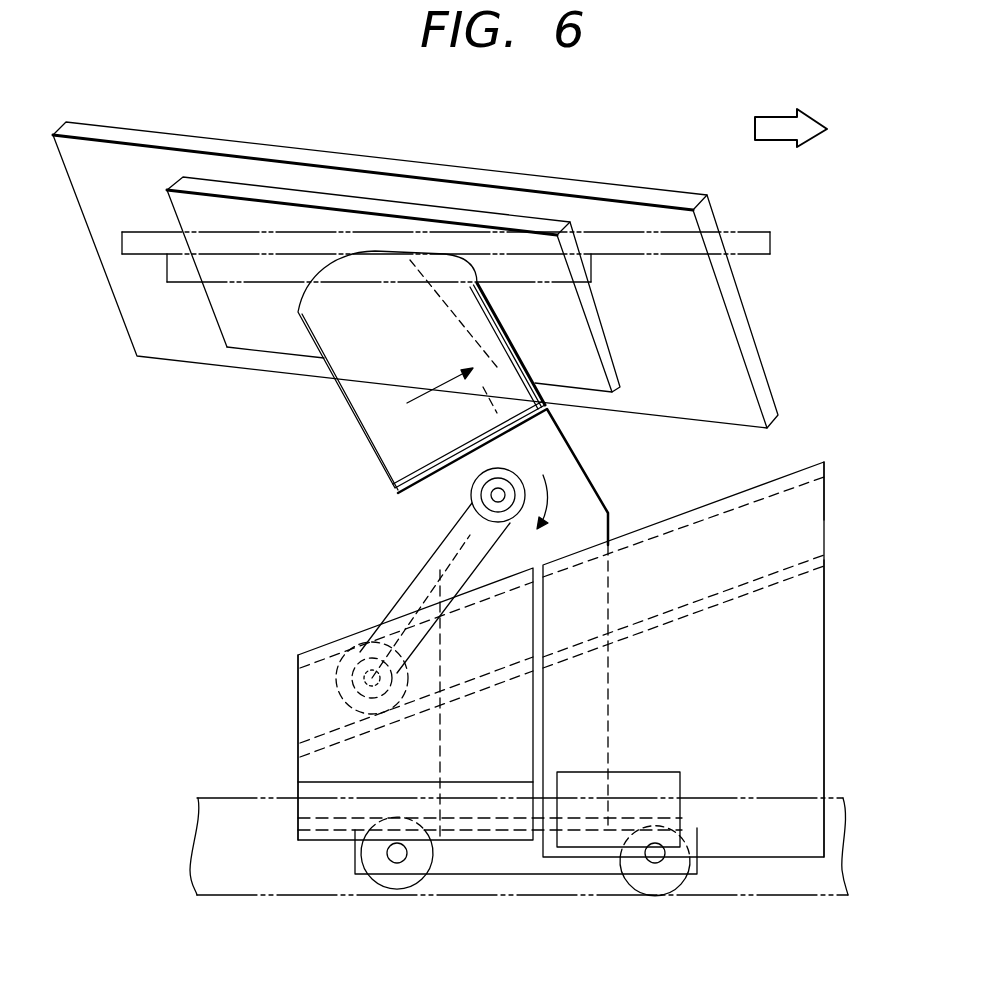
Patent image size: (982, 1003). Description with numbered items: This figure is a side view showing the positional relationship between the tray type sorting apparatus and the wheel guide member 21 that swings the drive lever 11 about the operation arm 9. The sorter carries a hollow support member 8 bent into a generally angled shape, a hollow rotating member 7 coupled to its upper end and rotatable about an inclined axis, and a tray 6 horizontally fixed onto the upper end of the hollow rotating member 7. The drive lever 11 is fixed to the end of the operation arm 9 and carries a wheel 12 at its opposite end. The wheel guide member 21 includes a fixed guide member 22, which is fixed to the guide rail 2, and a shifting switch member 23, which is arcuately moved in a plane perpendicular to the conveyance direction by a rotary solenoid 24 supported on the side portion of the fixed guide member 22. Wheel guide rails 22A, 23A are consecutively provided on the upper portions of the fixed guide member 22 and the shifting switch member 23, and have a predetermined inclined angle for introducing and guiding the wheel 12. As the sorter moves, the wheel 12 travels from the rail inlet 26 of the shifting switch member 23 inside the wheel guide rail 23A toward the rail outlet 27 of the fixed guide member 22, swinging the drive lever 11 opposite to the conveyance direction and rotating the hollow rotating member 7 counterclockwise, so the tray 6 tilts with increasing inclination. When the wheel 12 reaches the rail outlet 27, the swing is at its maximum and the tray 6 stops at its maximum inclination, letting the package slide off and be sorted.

The guide rail 2 is at (793, 875).
The tray 6 is at (511, 173).
The hollow rotating member 7 is at (357, 365).
The hollow support member 8 is at (587, 513).
The operation arm 9 is at (521, 479).
The drive lever 11 is at (413, 583).
The wheel 12 is at (362, 653).
The wheel guide member 21 is at (840, 641).
The fixed guide member 22 is at (800, 705).
The wheel guide rail 22A is at (790, 498).
The shifting switch member 23 is at (320, 842).
The wheel guide rail 23A is at (308, 685).
The rotary solenoid 24 is at (588, 842).
The rail inlet 26 is at (285, 721).
The rail outlet 27 is at (841, 491).